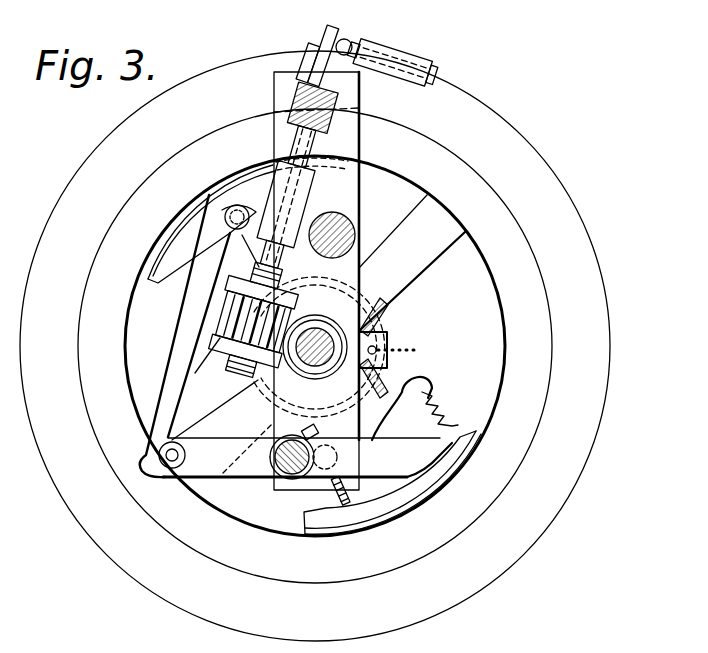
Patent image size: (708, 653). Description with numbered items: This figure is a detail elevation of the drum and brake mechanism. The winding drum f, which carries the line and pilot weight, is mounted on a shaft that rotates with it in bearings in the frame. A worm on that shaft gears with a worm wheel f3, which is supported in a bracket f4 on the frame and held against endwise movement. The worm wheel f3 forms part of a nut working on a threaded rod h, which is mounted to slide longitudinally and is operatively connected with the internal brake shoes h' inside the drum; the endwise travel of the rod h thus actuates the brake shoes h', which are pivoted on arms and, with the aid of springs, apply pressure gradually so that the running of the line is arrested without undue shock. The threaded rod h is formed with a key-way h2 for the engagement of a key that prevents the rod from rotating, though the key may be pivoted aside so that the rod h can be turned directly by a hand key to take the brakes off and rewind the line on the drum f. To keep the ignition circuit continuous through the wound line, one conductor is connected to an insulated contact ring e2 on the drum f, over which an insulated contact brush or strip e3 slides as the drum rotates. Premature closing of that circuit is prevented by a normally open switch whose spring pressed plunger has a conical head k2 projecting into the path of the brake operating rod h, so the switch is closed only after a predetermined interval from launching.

The winding drum f is at (115, 263).
The worm wheel f3 is at (330, 327).
The bracket f4 is at (199, 336).
The threaded rod h is at (287, 186).
The internal brake shoes h' is at (317, 369).
The key-way h2 is at (322, 74).
The conical head k2 is at (328, 37).
The insulated contact brush e3 is at (387, 345).
The insulated contact ring e2 is at (380, 380).